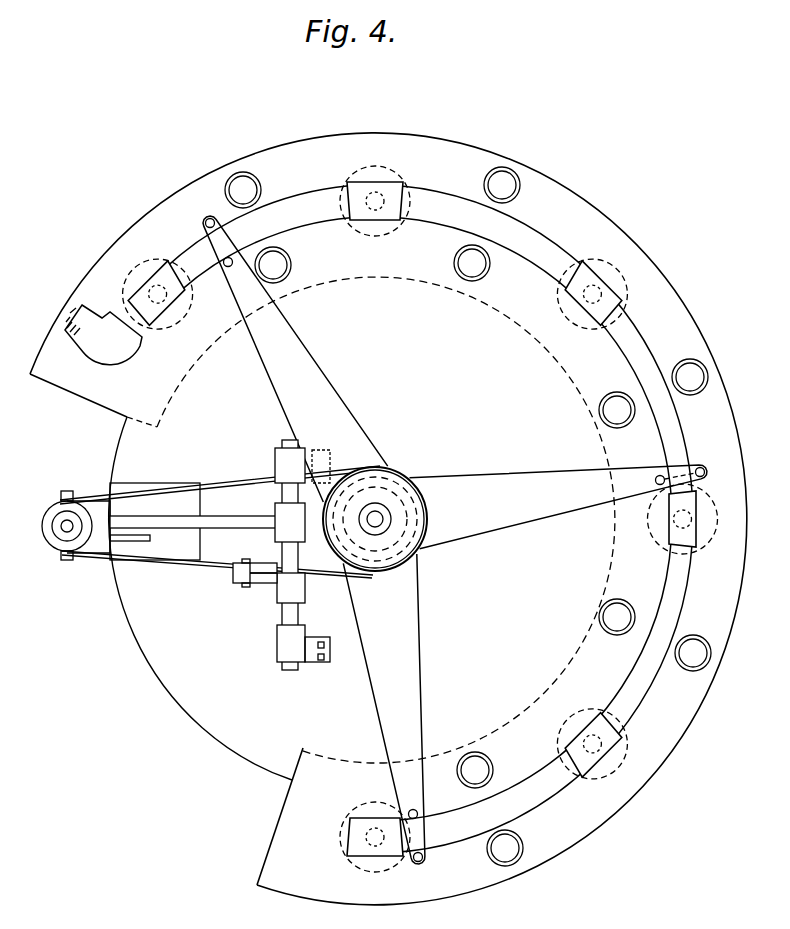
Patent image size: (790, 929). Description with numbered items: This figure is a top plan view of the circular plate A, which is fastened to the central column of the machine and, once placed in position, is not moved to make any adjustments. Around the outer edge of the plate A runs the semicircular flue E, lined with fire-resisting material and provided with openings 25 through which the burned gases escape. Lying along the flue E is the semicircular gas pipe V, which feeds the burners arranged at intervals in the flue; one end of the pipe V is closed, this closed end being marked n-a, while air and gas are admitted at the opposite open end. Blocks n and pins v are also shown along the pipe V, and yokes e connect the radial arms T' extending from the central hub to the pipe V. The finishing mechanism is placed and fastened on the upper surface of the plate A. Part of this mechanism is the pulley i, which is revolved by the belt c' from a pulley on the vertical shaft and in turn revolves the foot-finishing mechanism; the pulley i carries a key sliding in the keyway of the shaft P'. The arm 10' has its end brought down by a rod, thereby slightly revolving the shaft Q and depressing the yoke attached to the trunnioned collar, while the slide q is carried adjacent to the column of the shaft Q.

The openings 25 is at (468, 516).
The blocks on guide ring n is at (420, 472).
The closed end of the pipe n-a is at (375, 837).
The pivot pins v is at (463, 532).
The semicircular pipe V is at (660, 655).
The flue E is at (386, 499).
The circular plate A is at (388, 519).
The yokes e is at (384, 519).
The arms T' is at (455, 540).
The belt c' is at (220, 519).
The shaft P' is at (155, 521).
The arm 10' is at (199, 527).
The shaft Q is at (302, 555).
The slide q is at (255, 583).
The pulley i is at (42, 548).